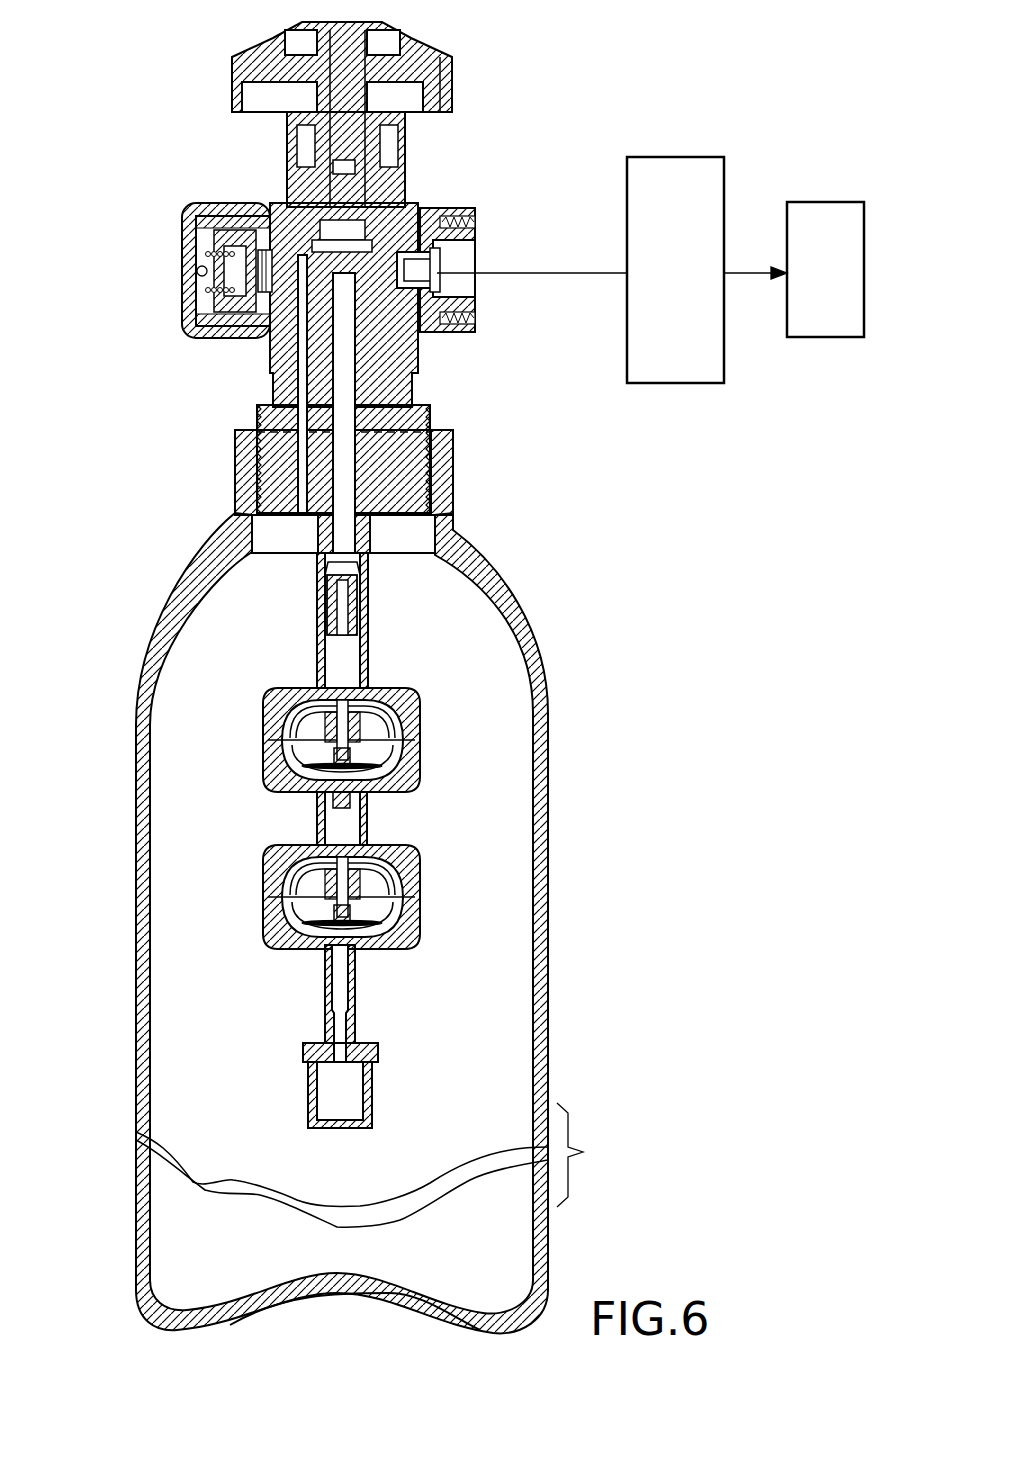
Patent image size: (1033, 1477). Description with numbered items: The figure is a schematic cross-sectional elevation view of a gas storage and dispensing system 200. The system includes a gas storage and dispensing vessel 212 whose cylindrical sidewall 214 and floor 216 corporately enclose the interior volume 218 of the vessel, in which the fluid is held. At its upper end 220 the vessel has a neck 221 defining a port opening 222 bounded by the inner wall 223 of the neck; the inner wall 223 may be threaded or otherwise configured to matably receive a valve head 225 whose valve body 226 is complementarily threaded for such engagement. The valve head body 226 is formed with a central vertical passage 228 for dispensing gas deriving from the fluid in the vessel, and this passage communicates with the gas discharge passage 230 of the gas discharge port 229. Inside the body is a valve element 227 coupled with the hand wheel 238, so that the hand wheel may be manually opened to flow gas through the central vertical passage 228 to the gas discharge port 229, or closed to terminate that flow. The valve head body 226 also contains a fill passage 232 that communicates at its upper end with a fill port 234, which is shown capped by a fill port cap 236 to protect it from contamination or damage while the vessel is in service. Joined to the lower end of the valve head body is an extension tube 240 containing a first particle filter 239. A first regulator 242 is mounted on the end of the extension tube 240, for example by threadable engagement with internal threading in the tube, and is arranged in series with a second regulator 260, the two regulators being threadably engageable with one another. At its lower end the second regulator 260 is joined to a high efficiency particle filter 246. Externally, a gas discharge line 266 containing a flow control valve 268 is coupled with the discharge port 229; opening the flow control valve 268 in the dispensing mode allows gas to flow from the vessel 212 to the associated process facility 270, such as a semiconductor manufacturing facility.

The gas storage and dispensing system 200 is at (642, 805).
The gas storage and dispensing vessel 212 is at (548, 1265).
The cylindrical sidewall 214 is at (547, 895).
The floor 216 is at (290, 1298).
The interior volume 218 is at (371, 1260).
The upper end 220 is at (194, 513).
The neck 221 is at (454, 512).
The port opening 222 is at (433, 433).
The inner wall 223 is at (256, 452).
The valve head 225 is at (184, 104).
The valve body 226 is at (404, 213).
The valve element 227 is at (392, 163).
The central vertical passage 228 is at (345, 452).
The gas discharge port 229 is at (476, 289).
The gas discharge passage 230 is at (442, 268).
The fill passage 232 is at (300, 356).
The fill port 234 is at (206, 279).
The fill port cap 236 is at (227, 204).
The hand wheel 238 is at (402, 57).
The first particle filter 239 is at (326, 606).
The extension tube 240 is at (370, 613).
The first regulator 242 is at (281, 775).
The high efficiency particle filter 246 is at (313, 1091).
The second regulator 260 is at (266, 872).
The gas discharge line 266 is at (581, 271).
The flow control valve 268 is at (670, 172).
The process facility 270 is at (816, 216).